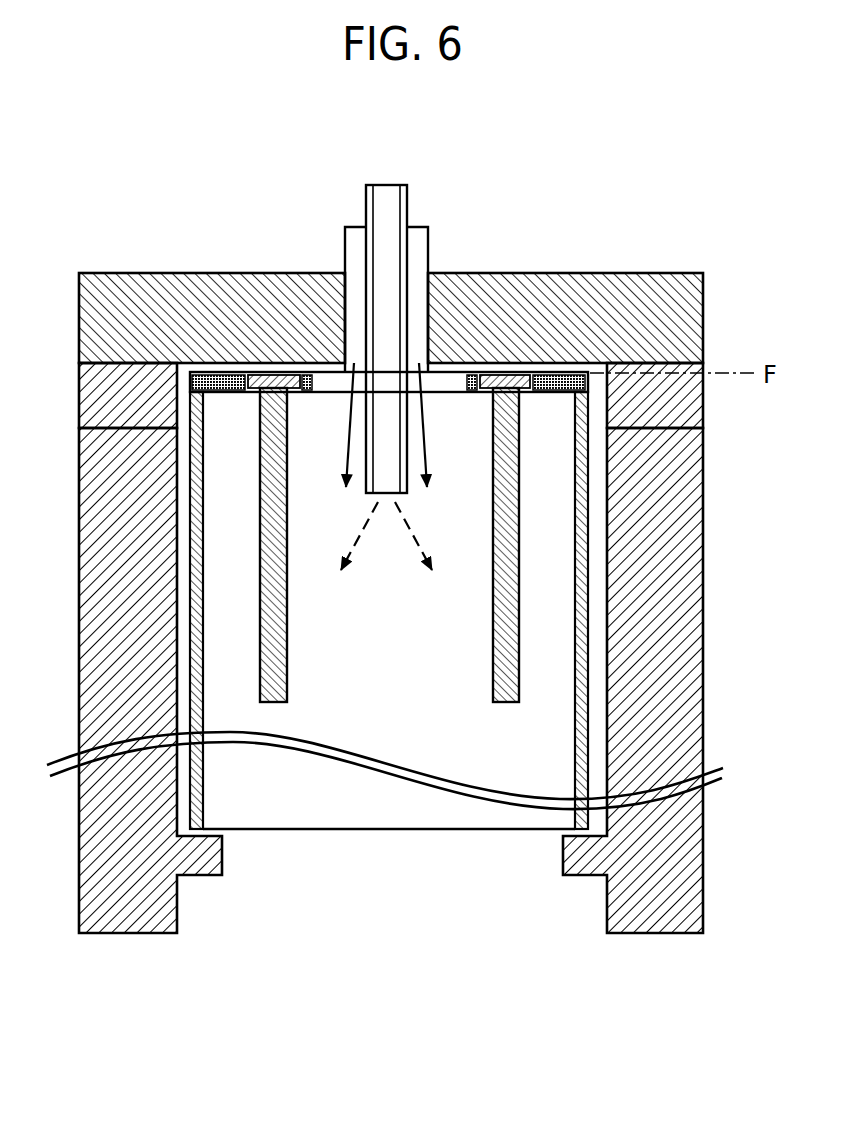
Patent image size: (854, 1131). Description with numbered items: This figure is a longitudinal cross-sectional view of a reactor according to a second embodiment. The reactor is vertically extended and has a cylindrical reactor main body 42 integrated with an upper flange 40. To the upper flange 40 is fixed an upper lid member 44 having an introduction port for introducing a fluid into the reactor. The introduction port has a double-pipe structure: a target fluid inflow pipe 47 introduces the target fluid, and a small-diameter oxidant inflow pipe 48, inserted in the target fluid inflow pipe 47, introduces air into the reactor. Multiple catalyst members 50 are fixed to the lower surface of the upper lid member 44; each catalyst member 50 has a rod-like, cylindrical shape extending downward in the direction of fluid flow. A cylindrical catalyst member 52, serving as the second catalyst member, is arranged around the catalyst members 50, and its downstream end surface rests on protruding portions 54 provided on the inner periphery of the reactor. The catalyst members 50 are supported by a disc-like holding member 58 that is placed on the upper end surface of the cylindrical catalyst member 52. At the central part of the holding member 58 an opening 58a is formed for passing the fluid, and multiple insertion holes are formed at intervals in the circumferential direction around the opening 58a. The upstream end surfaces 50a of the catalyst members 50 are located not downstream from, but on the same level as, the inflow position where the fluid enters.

The upper flange 40 is at (81, 413).
The reactor main body 42 is at (705, 655).
The upper lid member 44 is at (703, 322).
The target fluid inflow pipe 47 is at (428, 252).
The oxidant inflow pipe 48 is at (366, 197).
The catalyst member 50 is at (260, 637).
The upstream end surface 50a is at (280, 372).
The cylindrical catalyst member 52 is at (575, 572).
The protruding portion 54 is at (563, 848).
The holding member 58 is at (565, 372).
The opening 58a is at (333, 372).